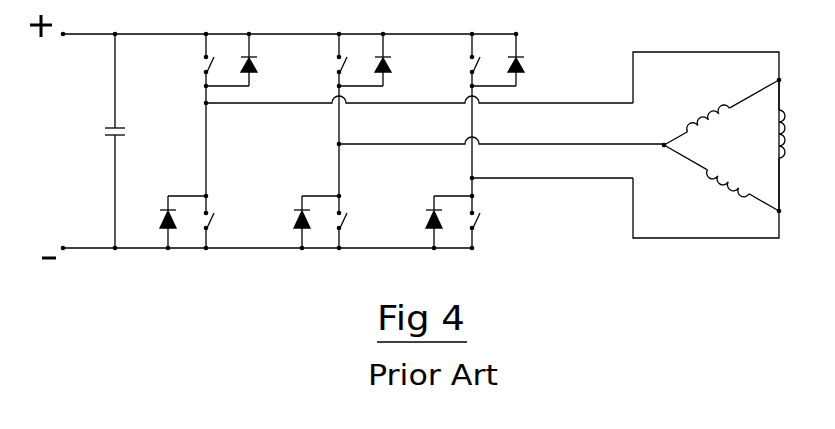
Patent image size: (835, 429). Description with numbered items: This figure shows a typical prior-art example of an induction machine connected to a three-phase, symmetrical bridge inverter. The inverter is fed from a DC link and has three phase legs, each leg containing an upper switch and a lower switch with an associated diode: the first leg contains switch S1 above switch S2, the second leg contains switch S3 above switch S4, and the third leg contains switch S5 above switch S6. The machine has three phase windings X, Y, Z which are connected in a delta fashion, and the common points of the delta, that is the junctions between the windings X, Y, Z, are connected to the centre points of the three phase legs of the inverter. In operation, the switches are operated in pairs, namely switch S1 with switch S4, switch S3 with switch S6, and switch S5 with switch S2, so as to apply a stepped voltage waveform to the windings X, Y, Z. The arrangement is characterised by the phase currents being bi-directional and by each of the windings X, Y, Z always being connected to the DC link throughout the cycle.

The switch S1 is at (195, 66).
The switch S2 is at (225, 219).
The switch S3 is at (328, 66).
The switch S4 is at (357, 219).
The switch S5 is at (460, 66).
The switch S6 is at (490, 219).
The phase winding X is at (721, 112).
The phase winding Y is at (721, 178).
The phase winding Z is at (770, 145).